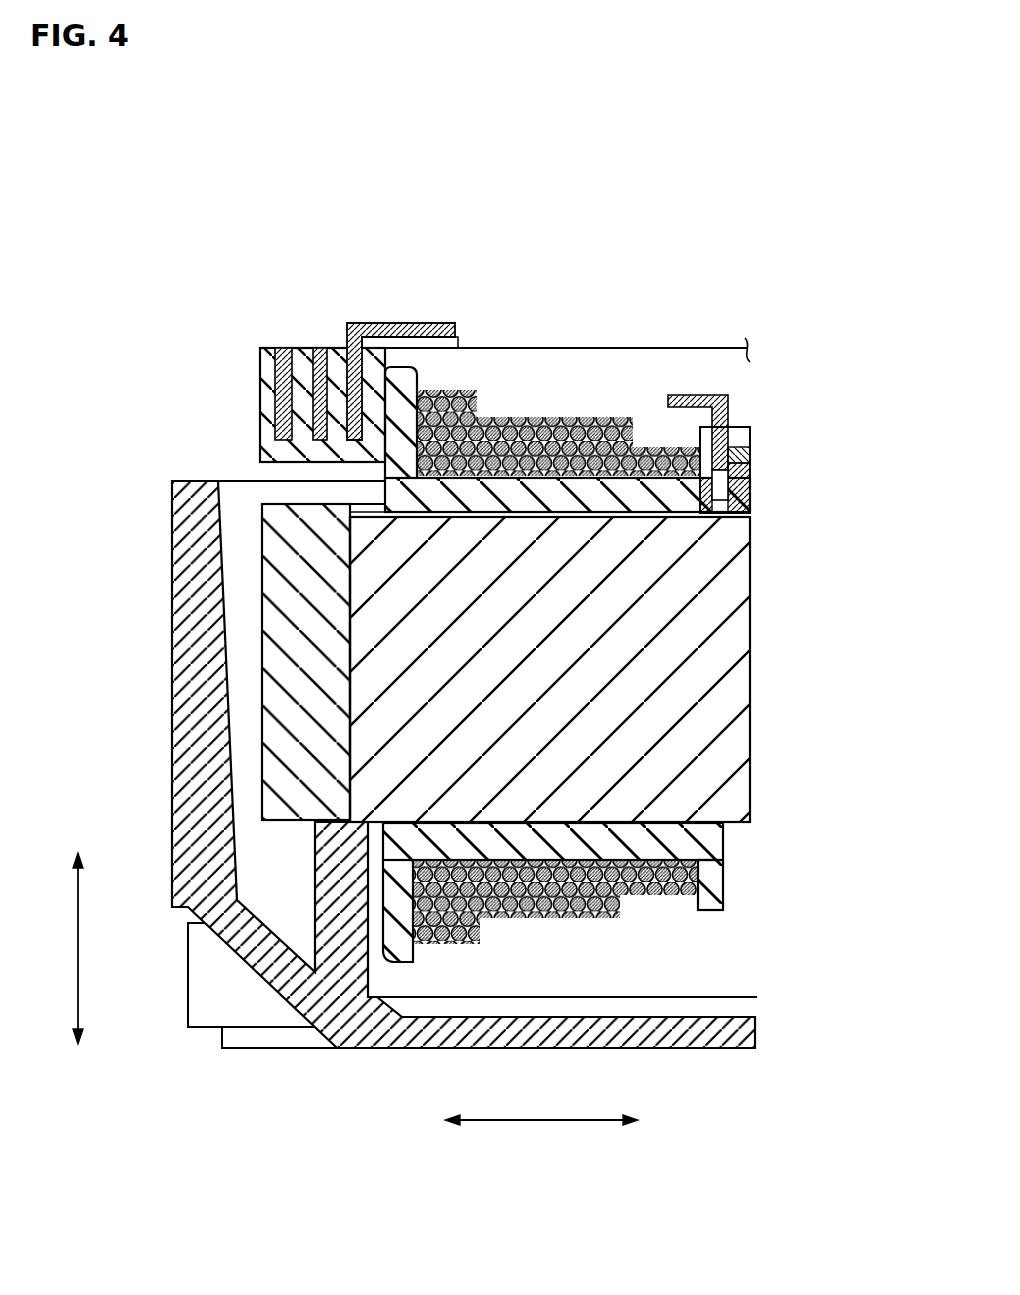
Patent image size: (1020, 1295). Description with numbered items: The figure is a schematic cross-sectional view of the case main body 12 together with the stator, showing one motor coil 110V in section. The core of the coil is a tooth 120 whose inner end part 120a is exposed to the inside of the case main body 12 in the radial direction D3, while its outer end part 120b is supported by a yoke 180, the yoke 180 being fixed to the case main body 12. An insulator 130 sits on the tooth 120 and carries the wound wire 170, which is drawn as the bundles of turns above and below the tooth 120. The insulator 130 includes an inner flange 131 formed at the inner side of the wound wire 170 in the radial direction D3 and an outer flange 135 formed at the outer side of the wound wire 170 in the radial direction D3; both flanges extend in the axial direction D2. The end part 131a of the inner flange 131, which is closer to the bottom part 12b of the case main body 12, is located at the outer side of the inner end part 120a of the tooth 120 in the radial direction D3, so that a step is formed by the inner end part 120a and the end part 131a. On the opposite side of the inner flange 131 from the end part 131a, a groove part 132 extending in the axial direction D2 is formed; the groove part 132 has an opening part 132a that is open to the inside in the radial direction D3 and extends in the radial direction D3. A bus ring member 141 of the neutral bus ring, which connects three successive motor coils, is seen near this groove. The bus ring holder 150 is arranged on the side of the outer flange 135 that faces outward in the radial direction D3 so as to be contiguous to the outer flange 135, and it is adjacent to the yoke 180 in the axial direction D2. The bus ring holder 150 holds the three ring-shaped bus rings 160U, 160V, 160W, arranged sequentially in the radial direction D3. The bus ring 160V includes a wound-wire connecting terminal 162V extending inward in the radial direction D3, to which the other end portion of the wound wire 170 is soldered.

The case main body 12 is at (189, 792).
The bottom part 12b is at (708, 1048).
The motor coil 110V is at (800, 588).
The tooth 120 is at (773, 737).
The inner end part 120a is at (733, 657).
The outer end part 120b is at (355, 688).
The insulator 130 is at (617, 843).
The inner flange 131 is at (750, 467).
The end part 131a is at (713, 883).
The groove part 132 is at (722, 490).
The opening part 132a is at (748, 450).
The outer flange 135 is at (403, 387).
The bus ring member 141 is at (720, 397).
The bus ring holder 150 is at (268, 443).
The bus ring 160U is at (275, 387).
The bus ring 160V is at (337, 353).
The bus ring 160W is at (323, 350).
The wound-wire connecting terminal 162V is at (443, 323).
The wound wire 170 is at (572, 420).
The yoke 180 is at (280, 627).
The axial direction D2 is at (78, 947).
The radial direction D3 is at (533, 1120).